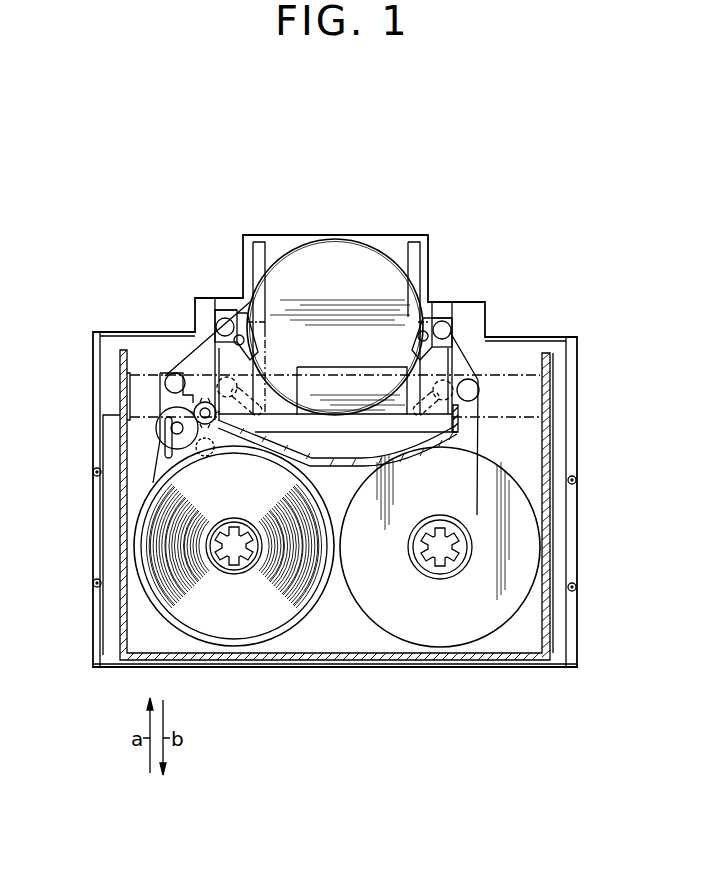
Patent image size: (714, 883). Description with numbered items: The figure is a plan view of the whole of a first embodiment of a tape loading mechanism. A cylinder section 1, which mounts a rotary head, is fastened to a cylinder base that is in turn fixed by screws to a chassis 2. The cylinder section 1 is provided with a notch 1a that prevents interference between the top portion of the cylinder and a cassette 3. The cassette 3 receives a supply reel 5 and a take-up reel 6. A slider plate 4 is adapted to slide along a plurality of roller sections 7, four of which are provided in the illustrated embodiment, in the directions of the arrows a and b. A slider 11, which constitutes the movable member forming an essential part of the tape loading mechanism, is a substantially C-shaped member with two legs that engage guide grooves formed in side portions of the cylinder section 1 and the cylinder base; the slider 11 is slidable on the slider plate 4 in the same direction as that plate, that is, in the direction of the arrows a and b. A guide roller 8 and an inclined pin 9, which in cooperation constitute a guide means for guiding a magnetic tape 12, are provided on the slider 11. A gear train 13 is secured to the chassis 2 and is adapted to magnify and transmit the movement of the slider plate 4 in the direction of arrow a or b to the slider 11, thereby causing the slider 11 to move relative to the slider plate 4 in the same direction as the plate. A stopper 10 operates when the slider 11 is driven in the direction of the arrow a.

The cylinder section 1 is at (338, 248).
The notch 1a is at (367, 403).
The chassis 2 is at (525, 353).
The cassette 3 is at (550, 640).
The slider plate 4 is at (110, 452).
The supply reel 5 is at (140, 542).
The take-up reel 6 is at (525, 552).
The roller sections 7 is at (94, 474).
The guide roller 8 is at (224, 318).
The inclined pin 9 is at (215, 333).
The stopper 10 is at (228, 303).
The slider 11 is at (418, 262).
The magnetic tape 12 is at (180, 365).
The gear train 13 is at (155, 412).